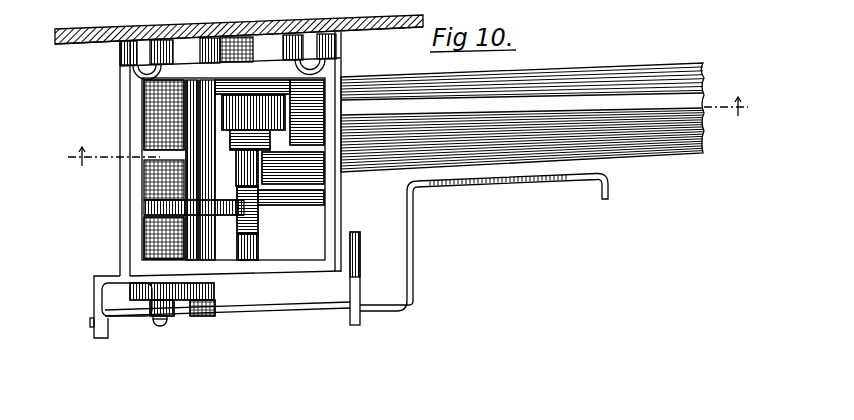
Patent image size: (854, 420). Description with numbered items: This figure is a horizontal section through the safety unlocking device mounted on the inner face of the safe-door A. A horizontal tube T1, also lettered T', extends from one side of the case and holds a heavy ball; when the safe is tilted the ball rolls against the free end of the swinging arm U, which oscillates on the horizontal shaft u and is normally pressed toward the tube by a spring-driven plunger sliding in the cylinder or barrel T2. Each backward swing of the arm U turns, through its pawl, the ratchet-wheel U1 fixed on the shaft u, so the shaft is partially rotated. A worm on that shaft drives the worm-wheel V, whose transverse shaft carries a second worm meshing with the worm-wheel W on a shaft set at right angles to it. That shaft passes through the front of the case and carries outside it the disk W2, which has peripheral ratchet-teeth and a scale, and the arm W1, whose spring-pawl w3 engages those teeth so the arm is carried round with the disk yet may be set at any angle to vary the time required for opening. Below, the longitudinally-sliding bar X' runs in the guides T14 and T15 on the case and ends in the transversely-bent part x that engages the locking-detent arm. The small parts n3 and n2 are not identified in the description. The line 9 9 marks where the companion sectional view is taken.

The safe-door A is at (269, 25).
The horizontal shaft u is at (252, 87).
The swinging arm U is at (253, 122).
The ratchet-wheel U1 is at (293, 132).
The tube T1 is at (522, 117).
The tube T' is at (235, 154).
The cylinder or barrel T2 is at (164, 119).
The spring-pawl w3 is at (262, 226).
The worm-wheel V is at (266, 249).
The worm-wheel W is at (164, 238).
The disk W2 is at (216, 289).
The housing n3 is at (127, 299).
The guide T15 is at (94, 300).
The guide T14 is at (360, 268).
The pin n2 is at (160, 328).
The arm W1 is at (184, 302).
The longitudinally-sliding bar X' is at (227, 318).
The transversely-bent part x is at (609, 188).
The section line 9 9 is at (407, 131).